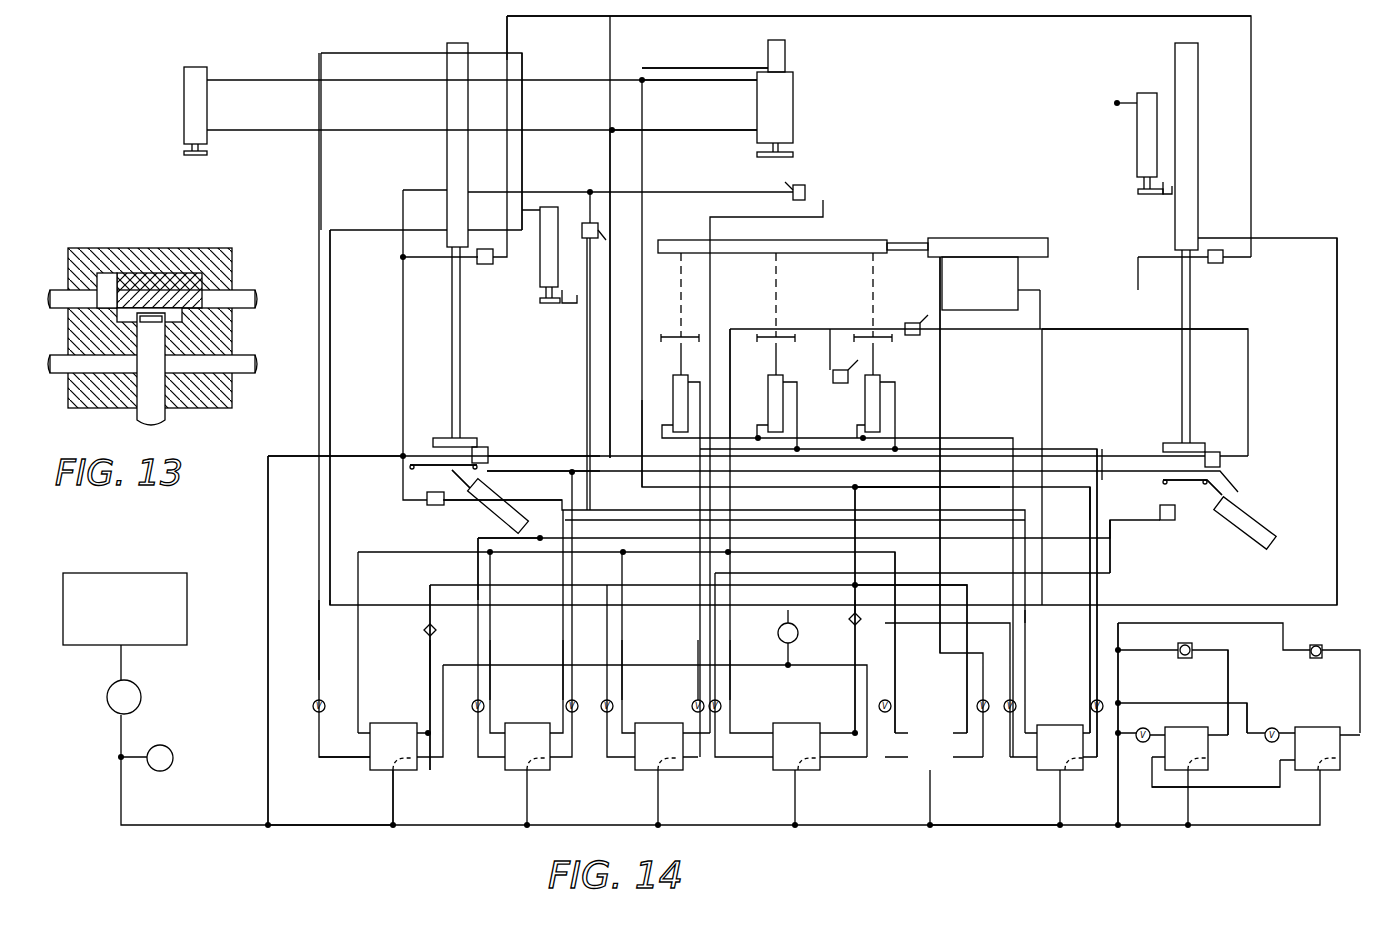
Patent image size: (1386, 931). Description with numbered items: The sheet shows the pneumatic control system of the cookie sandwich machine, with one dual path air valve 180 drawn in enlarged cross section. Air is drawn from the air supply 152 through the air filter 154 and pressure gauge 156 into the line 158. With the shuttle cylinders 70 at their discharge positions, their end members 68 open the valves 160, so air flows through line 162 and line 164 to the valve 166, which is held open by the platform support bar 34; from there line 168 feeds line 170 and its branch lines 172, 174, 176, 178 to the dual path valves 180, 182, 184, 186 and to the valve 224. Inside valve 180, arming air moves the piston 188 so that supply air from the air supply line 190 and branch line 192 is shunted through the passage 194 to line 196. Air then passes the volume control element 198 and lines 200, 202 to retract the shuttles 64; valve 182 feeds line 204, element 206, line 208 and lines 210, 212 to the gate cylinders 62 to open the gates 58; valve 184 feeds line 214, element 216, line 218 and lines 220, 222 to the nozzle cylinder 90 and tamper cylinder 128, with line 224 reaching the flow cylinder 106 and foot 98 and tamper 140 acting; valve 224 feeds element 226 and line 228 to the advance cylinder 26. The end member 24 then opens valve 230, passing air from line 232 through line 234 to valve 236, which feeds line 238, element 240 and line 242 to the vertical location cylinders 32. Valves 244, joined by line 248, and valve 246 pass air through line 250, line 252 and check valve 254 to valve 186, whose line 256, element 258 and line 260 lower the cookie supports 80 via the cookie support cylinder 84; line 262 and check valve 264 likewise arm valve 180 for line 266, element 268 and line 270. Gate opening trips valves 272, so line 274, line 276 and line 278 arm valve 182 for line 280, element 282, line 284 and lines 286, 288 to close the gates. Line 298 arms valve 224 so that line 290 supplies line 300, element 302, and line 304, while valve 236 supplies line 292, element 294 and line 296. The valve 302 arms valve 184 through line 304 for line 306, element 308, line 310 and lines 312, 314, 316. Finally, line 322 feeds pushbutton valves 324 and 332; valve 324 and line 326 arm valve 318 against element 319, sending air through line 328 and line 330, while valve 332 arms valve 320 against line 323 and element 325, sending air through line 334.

In FIG. 14, the end member of the conveyor frame 24 is at (659, 244).
In FIG. 14, the advance cylinder 26 is at (1033, 238).
In FIG. 14, the vertical location cylinders 32 is at (673, 396).
In FIG. 14, the platform support bar 34 is at (660, 334).
In FIG. 14, the gates 58 is at (415, 472).
In FIG. 14, the gate cylinders 62 is at (492, 496).
In FIG. 14, the shuttles 64 is at (438, 500).
In FIG. 14, the end members 68 is at (440, 438).
In FIG. 14, the shuttle cylinders 70 is at (445, 152).
In FIG. 14, the cookie supports 80 is at (570, 296).
In FIG. 14, the cookie support cylinder 84 is at (556, 204).
In FIG. 14, the nozzle cylinder 90 is at (793, 96).
In FIG. 14, the lift foot 98 is at (793, 156).
In FIG. 14, the flow cylinder 106 is at (786, 60).
In FIG. 14, the tamper cylinder 128 is at (180, 86).
In FIG. 14, the tamper 140 is at (196, 156).
In FIG. 14, the air source or supply 152 is at (165, 572).
In FIG. 14, the air filter 154 is at (142, 693).
In FIG. 14, the pressure gauge 156 is at (173, 754).
In FIG. 14, the line 158 is at (268, 558).
In FIG. 14, the air actuated valves 160 is at (487, 447).
In FIG. 14, the line 162 is at (540, 470).
In FIG. 14, the line 164 is at (1078, 322).
In FIG. 14, the air actuated valve 166 is at (914, 312).
In FIG. 14, the line 168 is at (720, 342).
In FIG. 14, the line 170 is at (650, 560).
In FIG. 13, the branch line 172 is at (62, 290).
In FIG. 14, the branch line 172 is at (360, 622).
In FIG. 14, the branch line 174 is at (493, 634).
In FIG. 14, the branch line 176 is at (628, 630).
In FIG. 14, the branch line 178 is at (733, 648).
In FIG. 13, the dual path air valve 180 is at (112, 245).
In FIG. 14, the dual path air valve 180 is at (380, 770).
In FIG. 14, the dual path air valve 182 is at (510, 783).
In FIG. 14, the dual path air valve 184 is at (646, 783).
In FIG. 14, the dual path air valve 186 is at (775, 767).
In FIG. 13, the piston 188 is at (172, 270).
In FIG. 14, the air supply line 190 is at (320, 825).
In FIG. 13, the branch line 192 is at (158, 425).
In FIG. 14, the branch line 192 is at (403, 825).
In FIG. 13, the passage 194 is at (205, 285).
In FIG. 13, the line 196 is at (240, 356).
In FIG. 14, the line 196 is at (443, 665).
In FIG. 14, the volume control element 198 is at (797, 636).
In FIG. 14, the line 200 is at (383, 601).
In FIG. 14, the line 202 is at (1163, 606).
In FIG. 14, the line 204 is at (562, 758).
In FIG. 14, the volume control element 206 is at (565, 706).
In FIG. 14, the line 208 is at (562, 652).
In FIG. 14, the line 210 is at (544, 445).
In FIG. 14, the line 212 is at (742, 482).
In FIG. 14, the line 214 is at (692, 758).
In FIG. 14, the volume control element 216 is at (690, 706).
In FIG. 14, the line 218 is at (692, 652).
In FIG. 14, the line 220 is at (354, 84).
In FIG. 14, the line 222 is at (688, 96).
In FIG. 14, the dual path air valve 224 is at (708, 66).
In FIG. 14, the volume control element 226 is at (978, 706).
In FIG. 14, the line 228 is at (943, 386).
In FIG. 14, the air valve 230 is at (603, 226).
In FIG. 14, the line 232 is at (402, 325).
In FIG. 14, the line 234 is at (585, 337).
In FIG. 14, the dual path valve 236 is at (1060, 725).
In FIG. 14, the line 238 is at (1089, 775).
In FIG. 14, the volume control element 240 is at (1093, 706).
In FIG. 14, the line 242 is at (1072, 451).
In FIG. 14, the air actuated valves 244 is at (480, 264).
In FIG. 14, the air actuated valve 246 is at (831, 386).
In FIG. 14, the line 248 is at (910, 18).
In FIG. 14, the line 250 is at (1138, 290).
In FIG. 14, the line 252 is at (840, 574).
In FIG. 14, the one-way ball check valve 254 is at (846, 635).
In FIG. 14, the line 256 is at (748, 783).
In FIG. 14, the volume control element 258 is at (722, 706).
In FIG. 14, the line 260 is at (1058, 520).
In FIG. 14, the line 262 is at (525, 585).
In FIG. 14, the one-way ball check valve 264 is at (424, 630).
In FIG. 14, the line 266 is at (348, 758).
In FIG. 14, the volume control element 268 is at (313, 705).
In FIG. 14, the line 270 is at (318, 646).
In FIG. 14, the air actuated valves 272 is at (430, 510).
In FIG. 14, the line 274 is at (390, 468).
In FIG. 14, the line 276 is at (840, 506).
In FIG. 14, the line 278 is at (1109, 573).
In FIG. 14, the line 280 is at (446, 755).
In FIG. 14, the volume control element 282 is at (483, 706).
In FIG. 14, the line 284 is at (474, 570).
In FIG. 14, the line 286 is at (478, 538).
In FIG. 14, the line 288 is at (1228, 546).
In FIG. 14, the line 290 is at (885, 480).
In FIG. 14, the line 292 is at (993, 773).
In FIG. 14, the volume control element 294 is at (980, 706).
In FIG. 14, the line 296 is at (1024, 616).
In FIG. 14, the line 298 is at (955, 585).
In FIG. 14, the line 300 is at (883, 758).
In FIG. 14, the volume control element 302 is at (806, 190).
In FIG. 14, the line 304 is at (708, 276).
In FIG. 14, the line 306 is at (628, 758).
In FIG. 14, the volume control element 308 is at (612, 706).
In FIG. 14, the line 310 is at (608, 358).
In FIG. 14, the line 312 is at (560, 132).
In FIG. 14, the line 314 is at (683, 134).
In FIG. 14, the line 316 is at (638, 50).
In FIG. 14, the valve 318 is at (1208, 764).
In FIG. 14, the volume control element 319 is at (1142, 725).
In FIG. 14, the valve 320 is at (1340, 770).
In FIG. 14, the line 322 is at (1128, 672).
In FIG. 14, the line 323 is at (1248, 710).
In FIG. 14, the pushbutton operated air valve 324 is at (1198, 646).
In FIG. 14, the volume control element 325 is at (1277, 730).
In FIG. 14, the line 326 is at (1231, 672).
In FIG. 14, the line 328 is at (1018, 825).
In FIG. 14, the line 330 is at (833, 765).
In FIG. 14, the pushbutton valve 332 is at (1319, 644).
In FIG. 14, the line 334 is at (1252, 787).